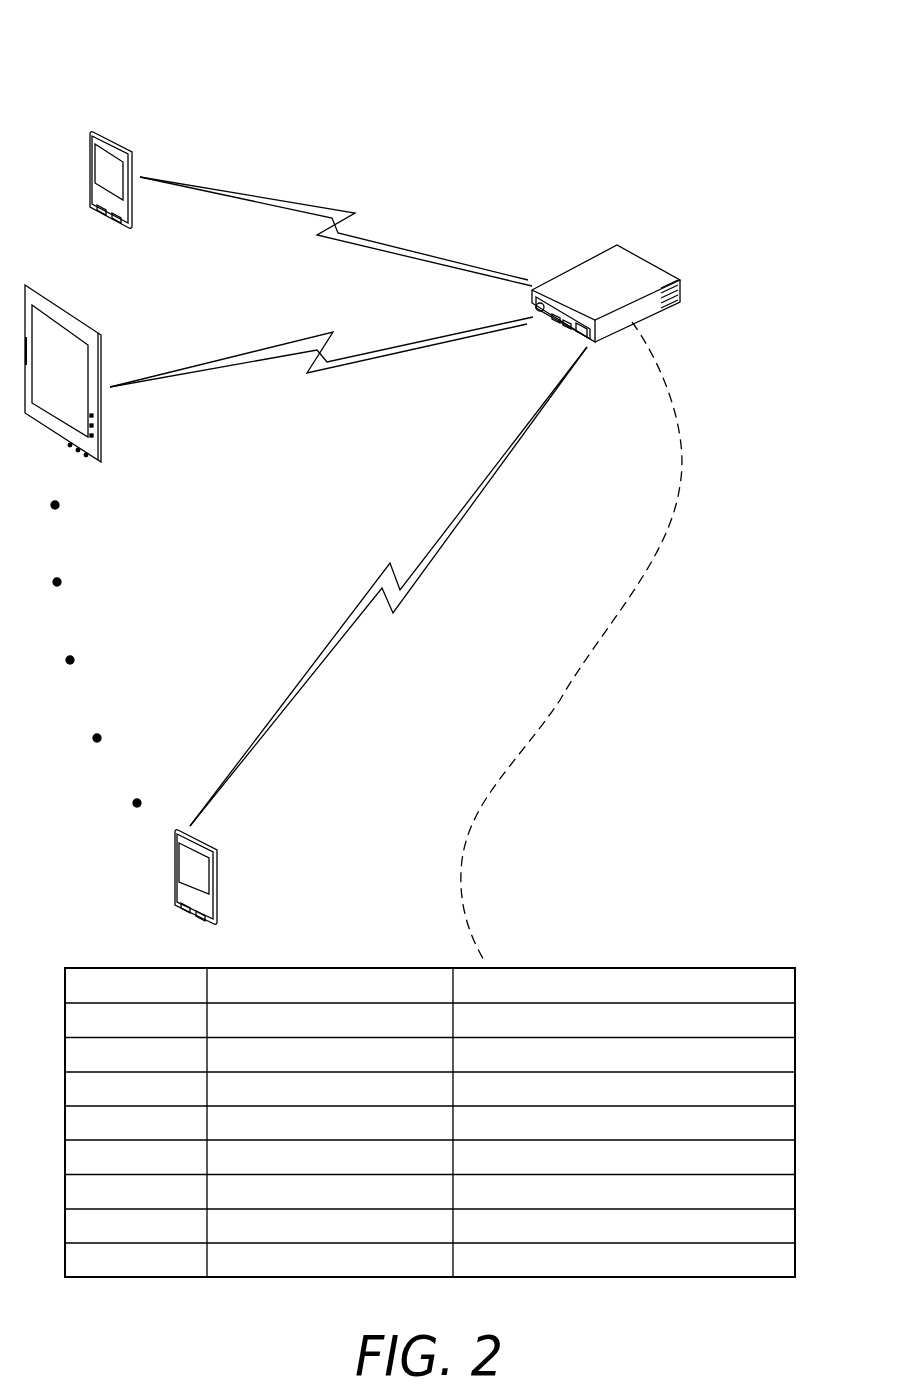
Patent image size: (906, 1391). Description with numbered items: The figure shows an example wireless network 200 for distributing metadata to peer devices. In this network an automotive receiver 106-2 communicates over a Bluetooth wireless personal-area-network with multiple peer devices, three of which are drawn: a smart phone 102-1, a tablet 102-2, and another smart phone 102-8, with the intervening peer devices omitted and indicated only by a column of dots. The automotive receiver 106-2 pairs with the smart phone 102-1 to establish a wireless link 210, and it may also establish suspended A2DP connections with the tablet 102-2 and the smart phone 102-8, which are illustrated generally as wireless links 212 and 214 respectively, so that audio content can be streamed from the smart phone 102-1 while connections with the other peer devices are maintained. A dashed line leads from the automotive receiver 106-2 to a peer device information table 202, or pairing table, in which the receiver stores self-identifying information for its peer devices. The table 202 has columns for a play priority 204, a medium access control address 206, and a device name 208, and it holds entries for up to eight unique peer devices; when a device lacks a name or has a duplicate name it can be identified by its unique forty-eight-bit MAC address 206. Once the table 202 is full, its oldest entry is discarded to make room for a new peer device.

The wireless network 200 is at (702, 72).
The smart phone 102-1 is at (123, 143).
The tablet 102-2 is at (80, 323).
The smart phone 102-8 is at (208, 843).
The automotive receiver 106-2 is at (653, 262).
The wireless link 210 is at (306, 189).
The wireless link 212 is at (358, 327).
The wireless link 214 is at (360, 628).
The peer device information table 202 is at (431, 1096).
The play priority 204 is at (197, 998).
The MAC address 206 is at (422, 998).
The device name 208 is at (673, 998).